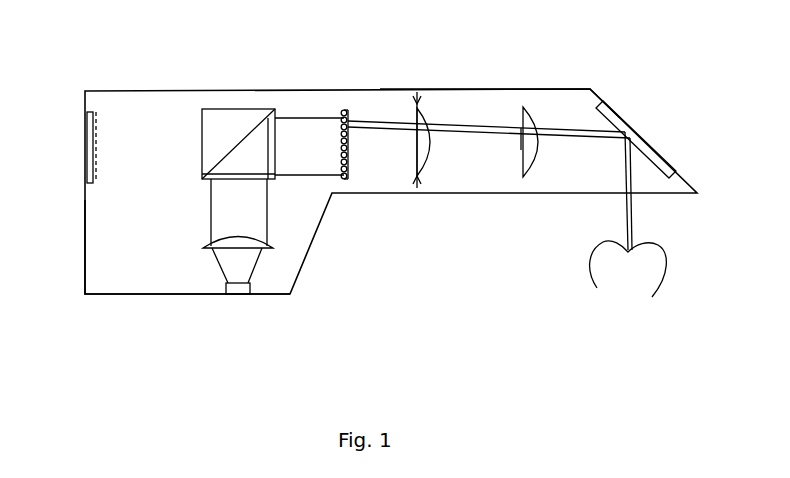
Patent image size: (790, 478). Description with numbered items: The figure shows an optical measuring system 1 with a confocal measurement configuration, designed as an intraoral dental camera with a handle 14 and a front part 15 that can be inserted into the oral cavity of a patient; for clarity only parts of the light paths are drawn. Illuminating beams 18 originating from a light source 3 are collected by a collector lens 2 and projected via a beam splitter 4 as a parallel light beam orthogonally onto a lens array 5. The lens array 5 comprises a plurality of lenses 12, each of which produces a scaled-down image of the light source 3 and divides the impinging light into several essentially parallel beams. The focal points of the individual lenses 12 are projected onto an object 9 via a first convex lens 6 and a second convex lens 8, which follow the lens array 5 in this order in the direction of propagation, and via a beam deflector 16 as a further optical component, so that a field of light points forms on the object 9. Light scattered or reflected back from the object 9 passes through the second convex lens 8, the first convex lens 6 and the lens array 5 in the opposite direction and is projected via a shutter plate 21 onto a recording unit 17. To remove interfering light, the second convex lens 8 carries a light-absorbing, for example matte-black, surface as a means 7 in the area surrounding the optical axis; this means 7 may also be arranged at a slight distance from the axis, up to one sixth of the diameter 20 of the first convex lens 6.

The optical measuring system 1 is at (178, 78).
The collector lens 2 is at (212, 248).
The light source 3 is at (242, 294).
The beam splitter 4 is at (223, 120).
The lens array 5 is at (350, 110).
The first convex lens 6 is at (422, 113).
The means (light-absorbing surface) 7 is at (520, 138).
The second convex lens 8 is at (535, 145).
The object 9 is at (598, 270).
The lenses 12 is at (342, 113).
The handle 14 is at (113, 294).
The front part 15 is at (555, 88).
The beam deflector 16 is at (608, 108).
The recording unit 17 is at (87, 122).
The illuminating beams 18 is at (258, 262).
The diameter of the first convex lens 20 is at (417, 100).
The shutter plate 21 is at (95, 117).